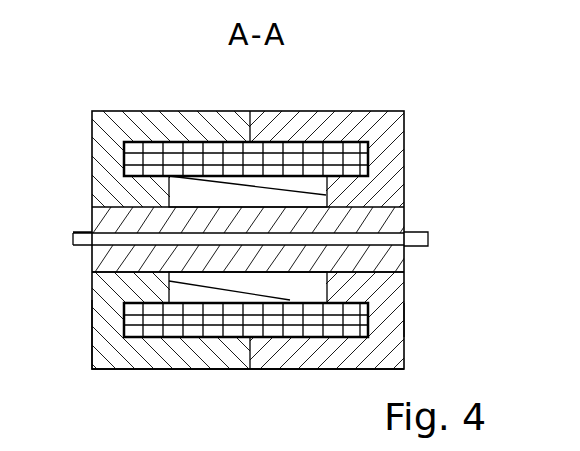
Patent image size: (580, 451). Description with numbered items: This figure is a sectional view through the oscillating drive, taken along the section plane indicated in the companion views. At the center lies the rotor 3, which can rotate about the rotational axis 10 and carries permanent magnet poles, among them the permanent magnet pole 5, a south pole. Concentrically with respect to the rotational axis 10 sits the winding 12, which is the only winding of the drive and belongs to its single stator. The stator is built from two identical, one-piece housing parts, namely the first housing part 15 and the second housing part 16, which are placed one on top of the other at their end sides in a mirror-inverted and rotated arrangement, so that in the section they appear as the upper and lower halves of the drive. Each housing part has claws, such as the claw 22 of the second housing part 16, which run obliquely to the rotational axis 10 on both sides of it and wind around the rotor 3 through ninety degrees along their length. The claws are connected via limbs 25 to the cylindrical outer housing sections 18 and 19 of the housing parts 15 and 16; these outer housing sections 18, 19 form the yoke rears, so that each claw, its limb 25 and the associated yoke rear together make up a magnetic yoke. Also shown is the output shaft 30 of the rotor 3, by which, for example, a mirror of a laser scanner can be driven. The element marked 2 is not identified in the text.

The rotational axis 10 is at (447, 239).
The output shaft 30 is at (413, 235).
The permanent magnet pole 5 is at (403, 232).
The lower carrier layer 2 is at (403, 258).
The rotor 3 is at (403, 267).
The winding 12 is at (403, 323).
The limb 25 is at (124, 152).
The claw 22 is at (248, 240).
The first housing part 15 is at (403, 359).
The second housing part 16 is at (92, 369).
The cylindrical outer housing section 18 is at (345, 372).
The cylindrical outer housing section 19 is at (178, 372).